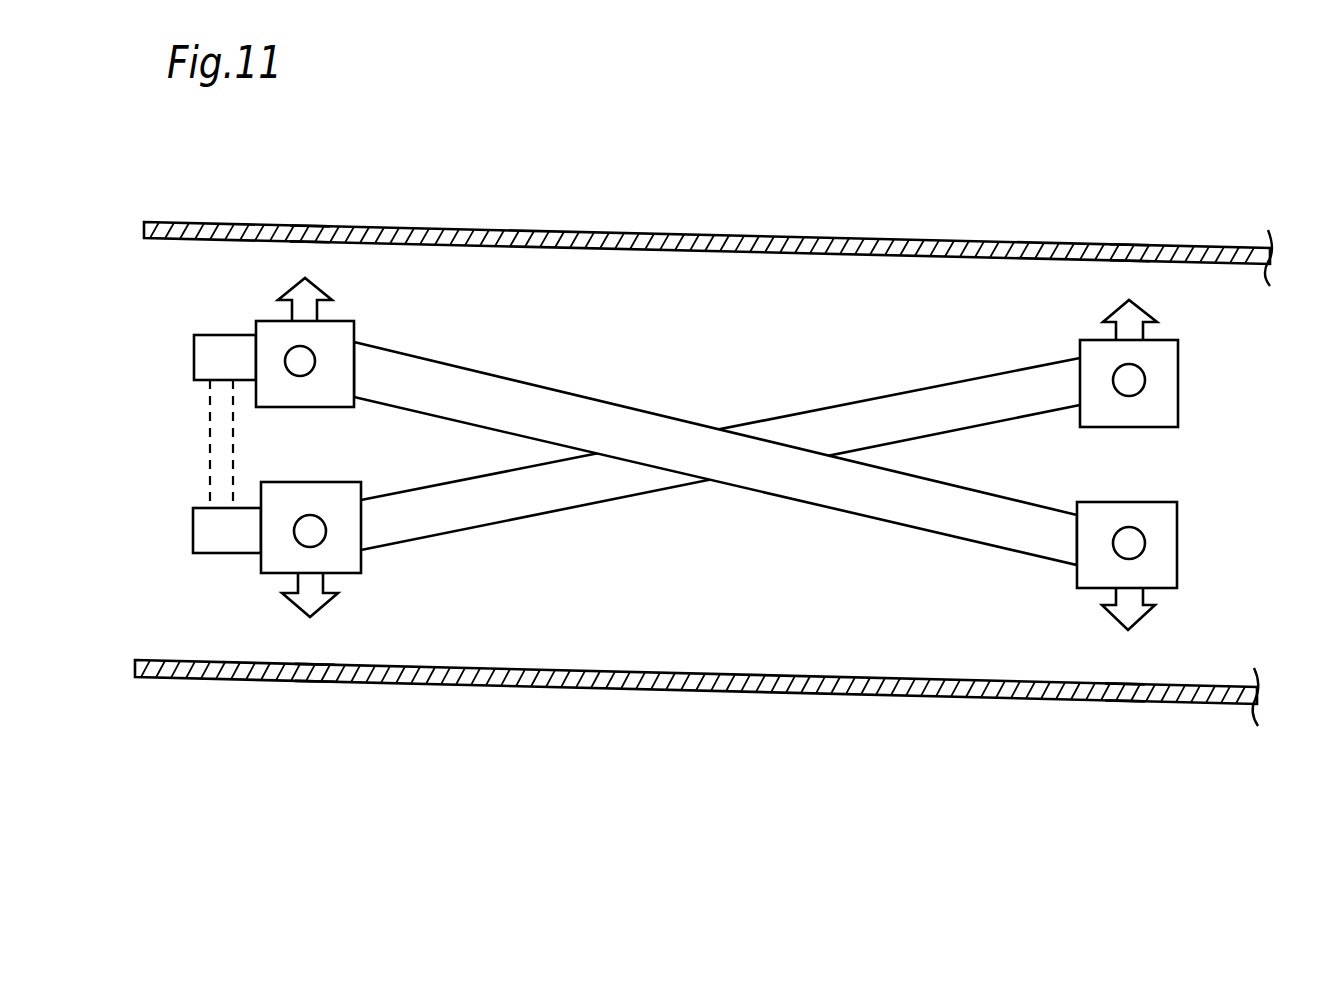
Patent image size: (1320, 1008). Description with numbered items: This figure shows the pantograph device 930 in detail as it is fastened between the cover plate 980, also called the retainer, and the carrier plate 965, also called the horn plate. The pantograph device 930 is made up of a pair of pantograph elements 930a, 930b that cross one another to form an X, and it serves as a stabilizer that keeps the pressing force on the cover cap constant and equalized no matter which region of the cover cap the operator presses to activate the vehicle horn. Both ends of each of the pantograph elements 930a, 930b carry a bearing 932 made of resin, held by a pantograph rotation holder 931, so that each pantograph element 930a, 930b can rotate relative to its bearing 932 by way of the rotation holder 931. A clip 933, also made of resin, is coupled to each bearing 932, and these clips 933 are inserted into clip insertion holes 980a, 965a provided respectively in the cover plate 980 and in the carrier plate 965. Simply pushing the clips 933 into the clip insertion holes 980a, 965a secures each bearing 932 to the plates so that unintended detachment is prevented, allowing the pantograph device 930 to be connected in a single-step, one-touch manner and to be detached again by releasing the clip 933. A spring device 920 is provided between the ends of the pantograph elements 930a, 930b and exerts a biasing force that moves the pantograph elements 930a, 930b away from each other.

The spring device 920 is at (208, 440).
The pantograph device 930 is at (717, 425).
The pantograph element 930a is at (570, 413).
The pantograph element 930b is at (872, 410).
The pantograph rotation holder 931 is at (372, 615).
The bearing 932 is at (425, 592).
The clip 933 is at (295, 602).
The carrier plate 965 is at (633, 690).
The clip insertion hole 965a is at (1128, 698).
The cover plate 980 is at (637, 236).
The clip insertion hole 980a is at (1130, 258).